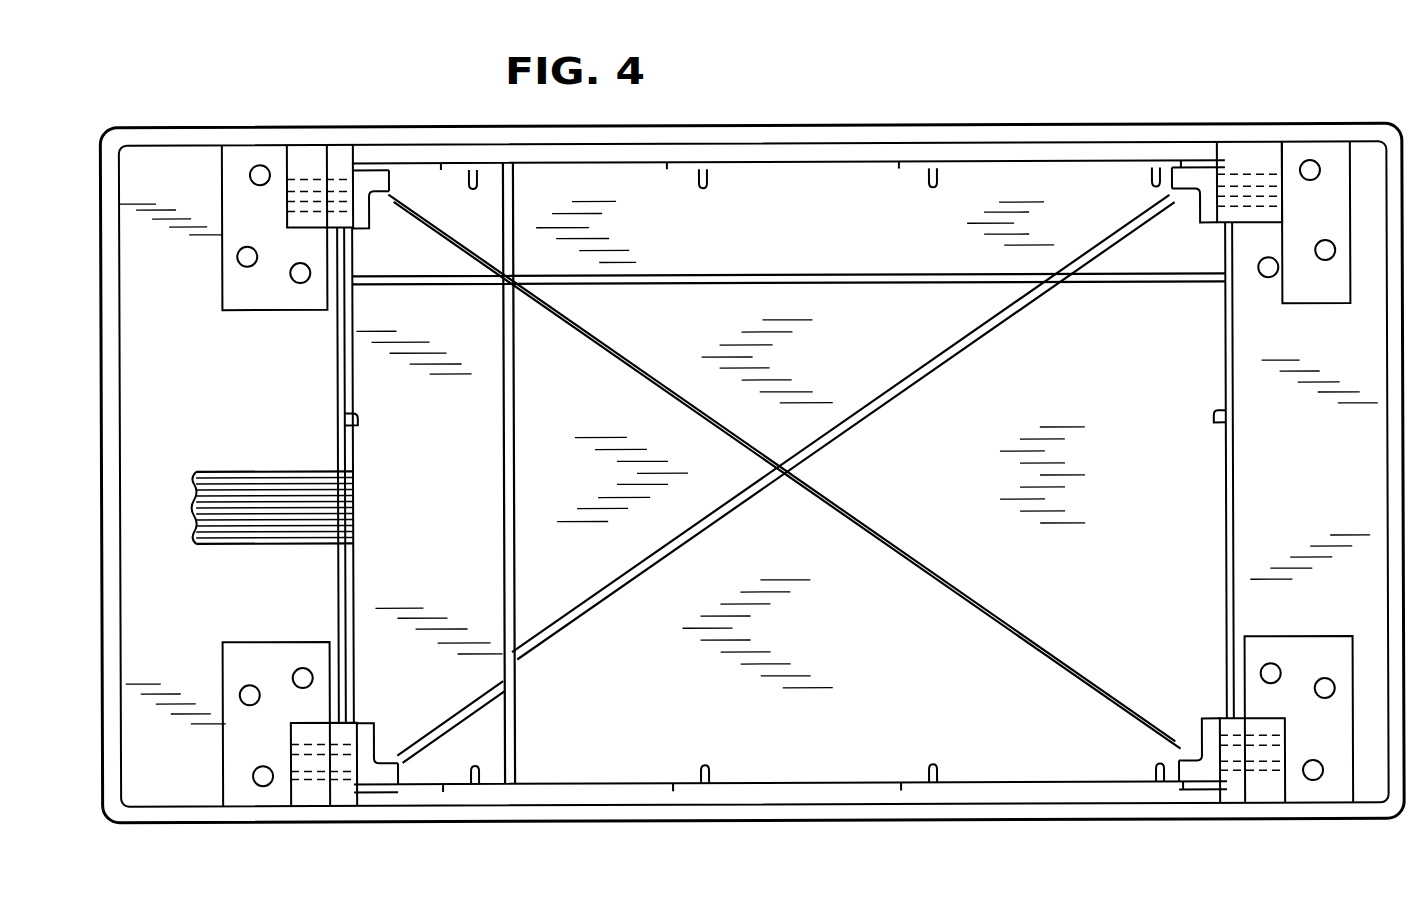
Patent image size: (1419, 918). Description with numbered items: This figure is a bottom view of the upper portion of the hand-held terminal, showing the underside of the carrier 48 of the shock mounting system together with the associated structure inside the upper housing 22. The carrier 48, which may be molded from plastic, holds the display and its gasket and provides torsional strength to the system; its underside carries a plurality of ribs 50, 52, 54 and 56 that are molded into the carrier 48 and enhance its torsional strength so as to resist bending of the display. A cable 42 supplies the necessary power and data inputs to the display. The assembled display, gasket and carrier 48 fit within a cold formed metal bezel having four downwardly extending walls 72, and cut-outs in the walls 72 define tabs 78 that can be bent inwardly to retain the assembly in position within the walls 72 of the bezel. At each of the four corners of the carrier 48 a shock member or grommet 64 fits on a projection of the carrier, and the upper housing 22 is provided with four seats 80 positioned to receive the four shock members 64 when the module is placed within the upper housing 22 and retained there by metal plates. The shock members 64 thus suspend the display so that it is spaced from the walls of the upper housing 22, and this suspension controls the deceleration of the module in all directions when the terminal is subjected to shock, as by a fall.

The upper housing 22 is at (1012, 124).
The cable 42 is at (217, 468).
The carrier 48 is at (792, 748).
The rib 50 is at (876, 420).
The rib 52 is at (1030, 633).
The rib 54 is at (515, 407).
The rib 56 is at (800, 272).
The shock member 64 is at (322, 160).
The walls 72 is at (778, 163).
The tabs 78 is at (469, 186).
The seats 80 is at (232, 285).